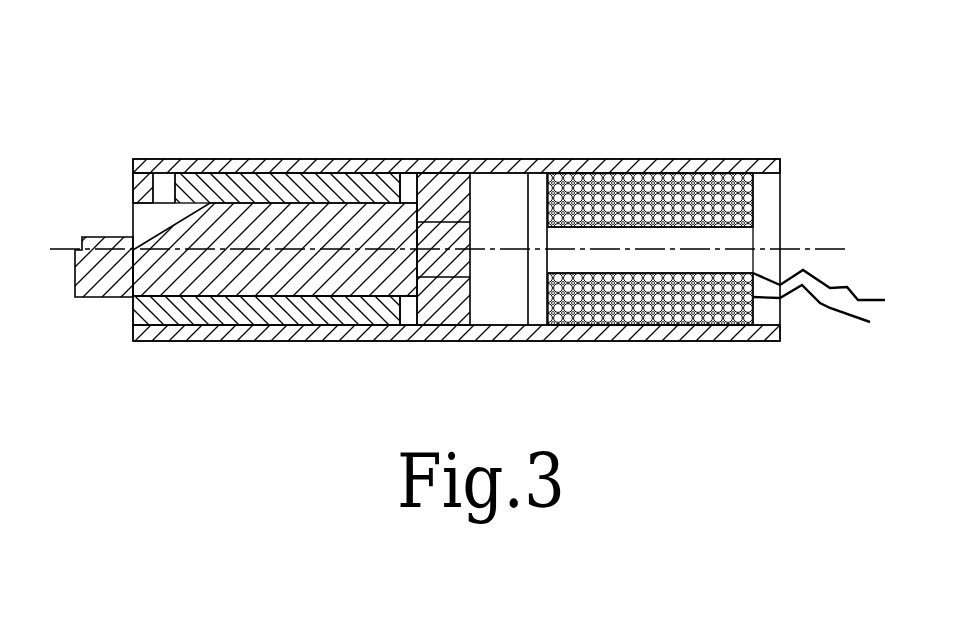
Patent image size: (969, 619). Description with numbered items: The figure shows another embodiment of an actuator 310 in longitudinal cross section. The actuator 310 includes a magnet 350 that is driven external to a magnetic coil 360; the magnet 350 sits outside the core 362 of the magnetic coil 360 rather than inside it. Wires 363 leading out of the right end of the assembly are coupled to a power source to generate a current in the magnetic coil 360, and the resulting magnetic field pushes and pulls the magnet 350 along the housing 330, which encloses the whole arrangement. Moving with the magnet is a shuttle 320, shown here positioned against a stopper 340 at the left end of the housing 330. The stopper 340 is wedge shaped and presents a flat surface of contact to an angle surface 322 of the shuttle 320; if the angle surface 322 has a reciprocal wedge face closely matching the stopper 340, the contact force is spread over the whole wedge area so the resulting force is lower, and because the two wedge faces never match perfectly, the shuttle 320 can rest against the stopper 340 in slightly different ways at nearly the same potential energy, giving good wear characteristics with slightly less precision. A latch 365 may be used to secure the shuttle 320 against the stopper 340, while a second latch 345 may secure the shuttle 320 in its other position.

The actuator 310 is at (807, 70).
The shuttle 320 is at (287, 217).
The angle surface 322 is at (190, 180).
The housing 330 is at (637, 333).
The stopper 340 is at (163, 191).
The latch 345 is at (538, 187).
The magnet 350 is at (448, 183).
The magnetic coil 360 is at (740, 197).
The core 362 is at (607, 237).
The wires 363 is at (833, 310).
The latch 365 is at (408, 182).